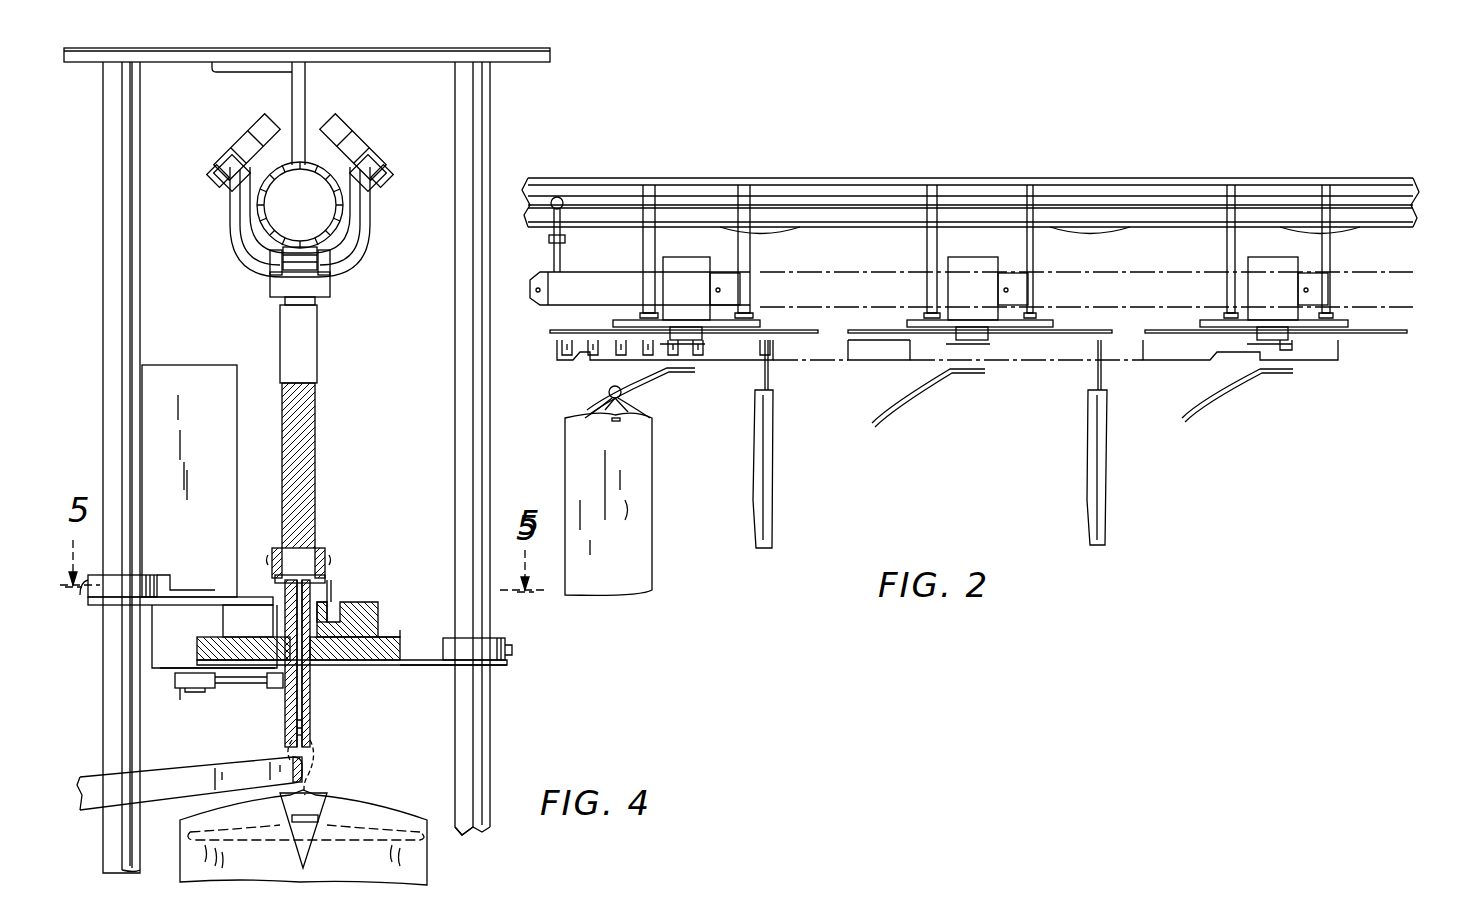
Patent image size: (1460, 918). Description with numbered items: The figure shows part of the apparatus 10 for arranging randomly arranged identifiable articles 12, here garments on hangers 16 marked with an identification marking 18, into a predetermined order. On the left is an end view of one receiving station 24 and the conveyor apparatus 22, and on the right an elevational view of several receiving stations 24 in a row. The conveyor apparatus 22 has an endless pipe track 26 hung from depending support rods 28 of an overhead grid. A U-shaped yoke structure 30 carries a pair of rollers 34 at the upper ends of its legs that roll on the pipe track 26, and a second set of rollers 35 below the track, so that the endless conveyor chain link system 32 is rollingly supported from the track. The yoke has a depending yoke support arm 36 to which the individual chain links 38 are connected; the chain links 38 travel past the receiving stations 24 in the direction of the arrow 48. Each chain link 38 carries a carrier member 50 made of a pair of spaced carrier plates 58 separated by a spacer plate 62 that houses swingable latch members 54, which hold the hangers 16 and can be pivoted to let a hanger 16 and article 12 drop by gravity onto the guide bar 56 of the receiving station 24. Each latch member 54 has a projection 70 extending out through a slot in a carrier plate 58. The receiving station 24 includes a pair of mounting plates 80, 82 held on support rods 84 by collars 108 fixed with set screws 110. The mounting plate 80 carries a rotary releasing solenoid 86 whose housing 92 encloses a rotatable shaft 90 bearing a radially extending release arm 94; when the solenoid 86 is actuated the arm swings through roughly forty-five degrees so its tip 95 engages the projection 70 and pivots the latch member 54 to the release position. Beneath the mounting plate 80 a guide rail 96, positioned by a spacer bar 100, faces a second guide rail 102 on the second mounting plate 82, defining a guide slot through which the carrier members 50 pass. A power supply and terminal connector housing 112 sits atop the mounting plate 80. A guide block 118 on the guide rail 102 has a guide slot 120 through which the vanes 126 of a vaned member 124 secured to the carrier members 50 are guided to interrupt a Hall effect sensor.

In FIG. 2, the apparatus 10 is at (1243, 460).
In FIG. 4, the articles 12 is at (430, 820).
In FIG. 2, the articles 12 is at (640, 530).
In FIG. 4, the hanger 16 is at (318, 772).
In FIG. 2, the hanger 16 is at (608, 392).
In FIG. 4, the identification marking 18 is at (310, 842).
In FIG. 2, the identification marking 18 is at (628, 420).
In FIG. 4, the conveyor apparatus 22 is at (376, 200).
In FIG. 2, the conveyor apparatus 22 is at (1115, 205).
In FIG. 4, the receiving station 24 is at (138, 500).
In FIG. 2, the receiving station 24 is at (722, 335).
In FIG. 4, the pipe track 26 is at (342, 213).
In FIG. 2, the pipe track 26 is at (1070, 213).
In FIG. 4, the support rod 28 is at (305, 85).
In FIG. 4, the yoke structure 30 is at (362, 258).
In FIG. 2, the conveyor chain link system 32 is at (818, 285).
In FIG. 4, the rollers 34 is at (233, 130).
In FIG. 4, the second set of rollers 35 is at (283, 268).
In FIG. 4, the yoke support arm 36 is at (317, 323).
In FIG. 2, the yoke support arm 36 is at (562, 248).
In FIG. 4, the chain link 38 is at (315, 412).
In FIG. 2, the arrow 48 is at (945, 114).
In FIG. 4, the carrier member 50 is at (314, 690).
In FIG. 2, the carrier member 50 is at (580, 360).
In FIG. 4, the latch member 54 is at (305, 700).
In FIG. 4, the guide bar 56 is at (190, 790).
In FIG. 2, the guide bar 56 is at (640, 380).
In FIG. 4, the carrier plates 58 is at (310, 714).
In FIG. 4, the spacer plate 62 is at (308, 728).
In FIG. 4, the projection 70 is at (290, 660).
In FIG. 4, the mounting plate 80 is at (175, 590).
In FIG. 4, the second mounting plate 82 is at (415, 665).
In FIG. 4, the support rods 84 is at (128, 312).
In FIG. 2, the support rods 84 is at (1333, 195).
In FIG. 4, the rotary releasing solenoid 86 is at (170, 692).
In FIG. 2, the rotary releasing solenoid 86 is at (655, 340).
In FIG. 4, the rotatable shaft 90 is at (200, 690).
In FIG. 4, the solenoid housing 92 is at (152, 648).
In FIG. 4, the release arm 94 is at (237, 684).
In FIG. 2, the release arm 94 is at (685, 345).
In FIG. 4, the tip 95 is at (276, 690).
In FIG. 4, the guide rail 96 is at (205, 648).
In FIG. 4, the spacer bar 100 is at (222, 616).
In FIG. 4, the second guide rail 102 is at (400, 635).
In FIG. 4, the collars 108 is at (132, 580).
In FIG. 4, the set screws 110 is at (92, 595).
In FIG. 4, the power supply and terminal connector housing 112 is at (190, 380).
In FIG. 2, the power supply and terminal connector housing 112 is at (696, 265).
In FIG. 4, the guide block 118 is at (352, 620).
In FIG. 4, the guide slot 120 is at (370, 635).
In FIG. 4, the vaned member 124 is at (340, 570).
In FIG. 4, the vanes 126 is at (332, 598).